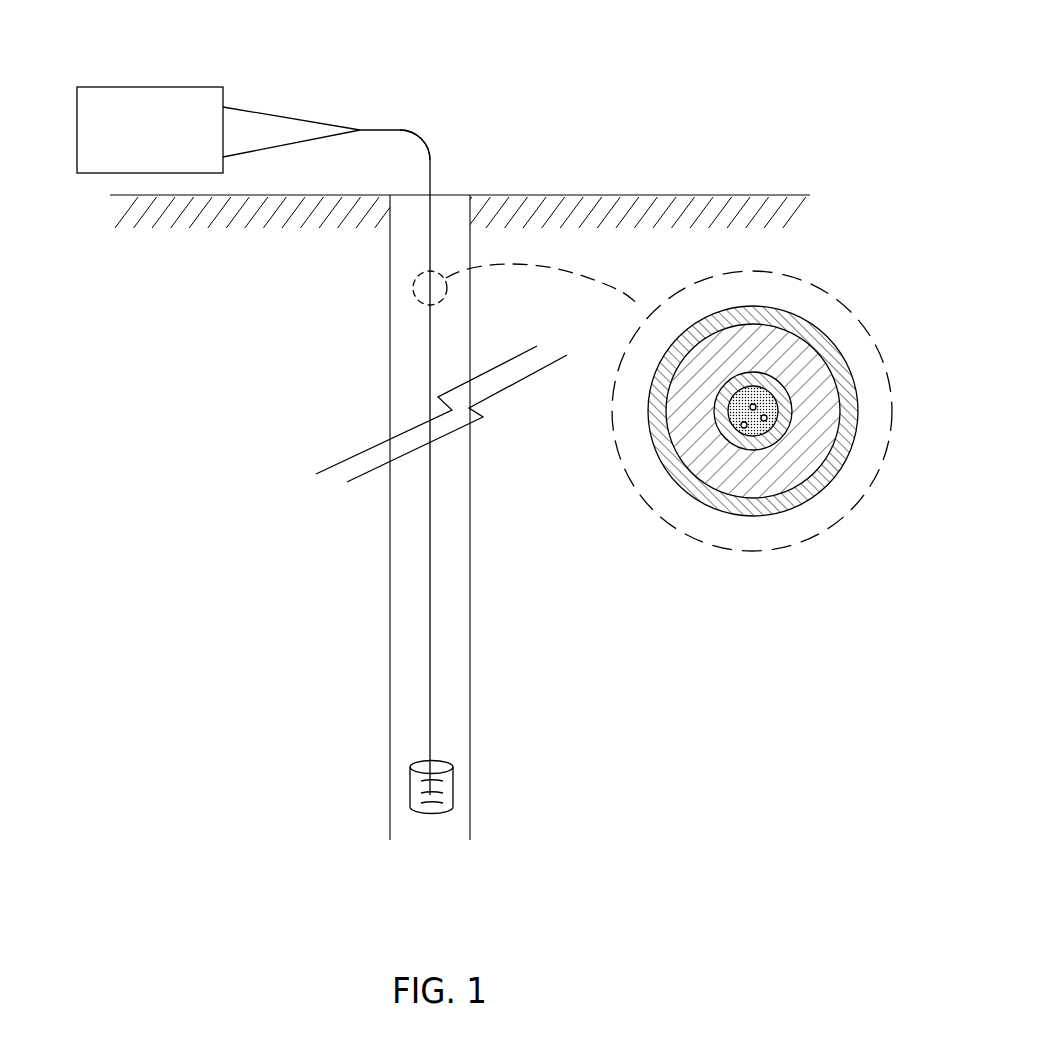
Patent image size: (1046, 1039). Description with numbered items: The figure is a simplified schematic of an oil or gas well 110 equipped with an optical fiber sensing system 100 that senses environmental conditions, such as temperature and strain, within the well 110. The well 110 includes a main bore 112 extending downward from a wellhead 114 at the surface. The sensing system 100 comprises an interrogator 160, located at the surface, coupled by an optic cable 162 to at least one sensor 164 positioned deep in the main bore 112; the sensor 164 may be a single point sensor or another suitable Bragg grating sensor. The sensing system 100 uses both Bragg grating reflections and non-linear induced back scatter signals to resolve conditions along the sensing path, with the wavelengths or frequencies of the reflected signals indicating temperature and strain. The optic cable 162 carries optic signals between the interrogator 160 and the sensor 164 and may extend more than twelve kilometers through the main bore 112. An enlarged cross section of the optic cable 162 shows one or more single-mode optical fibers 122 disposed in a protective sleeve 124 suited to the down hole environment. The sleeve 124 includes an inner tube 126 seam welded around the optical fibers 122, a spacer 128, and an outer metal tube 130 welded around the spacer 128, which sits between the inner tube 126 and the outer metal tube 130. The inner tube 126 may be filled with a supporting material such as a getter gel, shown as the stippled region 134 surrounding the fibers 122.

The optical fiber sensing system 100 is at (432, 135).
The oil or gas well 110 is at (406, 289).
The main bore 112 is at (471, 603).
The wellhead 114 is at (450, 195).
The single-mode optical fibers 122 is at (755, 405).
The protective sleeve 124 is at (723, 517).
The inner tube 126 is at (725, 433).
The spacer 128 is at (780, 478).
The outer metal tube 130 is at (848, 458).
The core filler material 134 is at (778, 408).
The interrogator 160 is at (103, 88).
The optic cable 162 is at (383, 130).
The sensor 164 is at (408, 783).